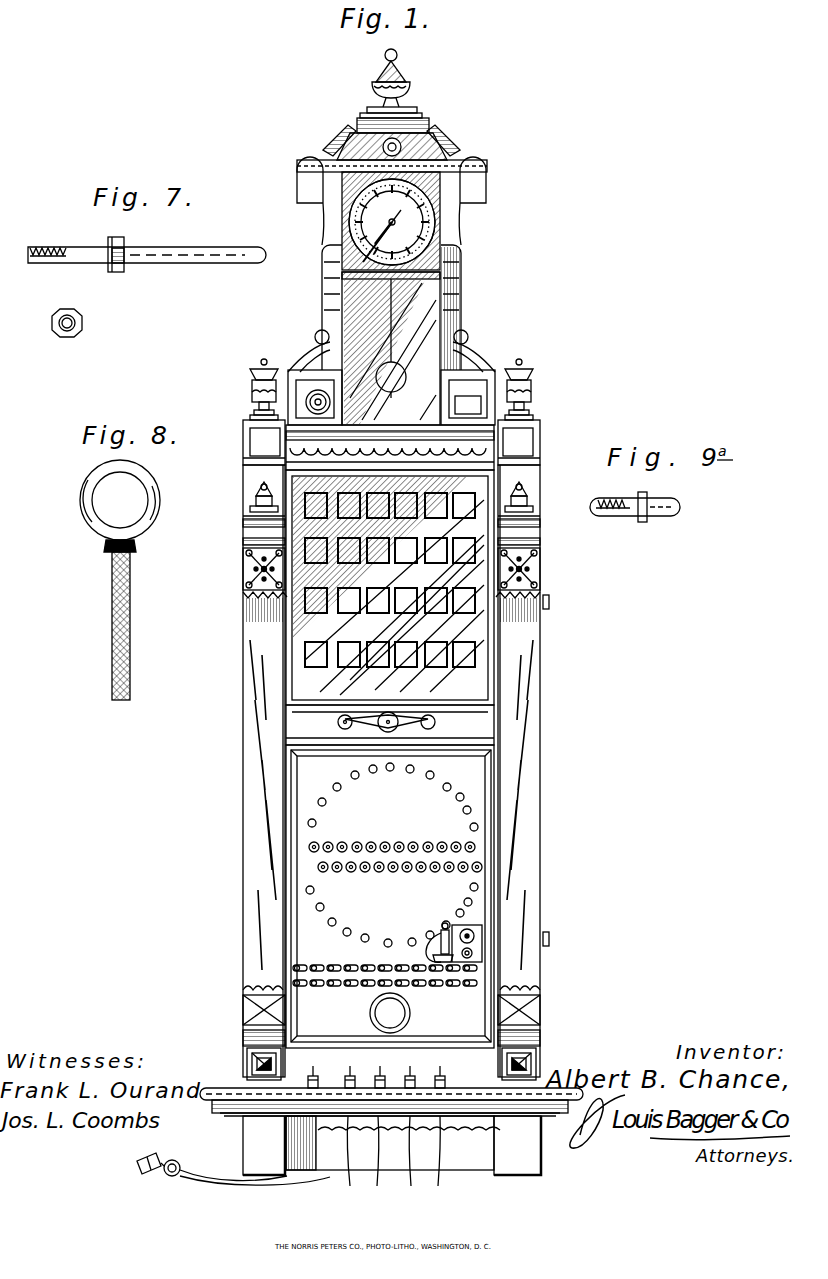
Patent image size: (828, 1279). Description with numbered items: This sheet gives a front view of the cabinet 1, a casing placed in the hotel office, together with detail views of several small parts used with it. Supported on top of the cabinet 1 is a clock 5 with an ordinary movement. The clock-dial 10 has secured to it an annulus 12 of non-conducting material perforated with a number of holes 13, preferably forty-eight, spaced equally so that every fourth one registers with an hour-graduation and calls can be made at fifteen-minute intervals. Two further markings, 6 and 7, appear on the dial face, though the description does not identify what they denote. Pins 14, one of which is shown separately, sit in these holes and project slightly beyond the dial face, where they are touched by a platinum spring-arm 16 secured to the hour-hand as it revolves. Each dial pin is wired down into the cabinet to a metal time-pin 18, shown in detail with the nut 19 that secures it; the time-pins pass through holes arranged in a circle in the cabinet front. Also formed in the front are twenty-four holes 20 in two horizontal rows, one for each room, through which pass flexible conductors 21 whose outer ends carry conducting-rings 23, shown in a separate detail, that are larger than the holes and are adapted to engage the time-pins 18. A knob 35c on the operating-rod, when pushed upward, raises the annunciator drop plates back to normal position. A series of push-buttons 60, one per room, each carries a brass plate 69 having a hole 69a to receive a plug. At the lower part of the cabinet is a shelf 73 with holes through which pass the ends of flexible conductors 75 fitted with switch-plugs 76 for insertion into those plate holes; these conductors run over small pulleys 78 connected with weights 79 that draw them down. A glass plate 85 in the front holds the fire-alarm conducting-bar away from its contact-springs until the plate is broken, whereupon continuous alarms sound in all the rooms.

In FIG. 1, the cabinet 1 is at (424, 759).
In FIG. 1, the platinum spring-arm 16 is at (438, 168).
In FIG. 1, the clock-dial 10 is at (423, 212).
In FIG. 1, the annulus 12 is at (412, 226).
In FIG. 1, the holes 13 is at (437, 240).
In FIG. 1, the hour hand 6 is at (385, 221).
In FIG. 1, the minute hand 7 is at (382, 236).
In FIG. 1, the clock 5 is at (430, 293).
In FIG. 1, the knob 35c is at (386, 717).
In FIG. 1, the time-pin 18 is at (340, 789).
In FIG. 7, the time-pin 18 is at (147, 245).
In FIG. 1, the holes 20 is at (395, 859).
In FIG. 1, the push-buttons 60 is at (328, 960).
In FIG. 1, the hole 69a is at (297, 969).
In FIG. 1, the brass plate 69 is at (330, 985).
In FIG. 1, the glass plate 85 is at (403, 1013).
In FIG. 1, the switch-plugs 76 is at (313, 1082).
In FIG. 1, the shelf 73 is at (445, 1083).
In FIG. 1, the flexible conductors 75 is at (378, 1154).
In FIG. 1, the pulleys 78 is at (247, 1163).
In FIG. 1, the weights 79 is at (151, 1154).
In FIG. 7, the nuts 19 is at (83, 323).
In FIG. 8, the conducting-rings 23 is at (150, 522).
In FIG. 8, the flexible conductors 21 is at (132, 644).
In FIG. 9A, the pins 14 is at (660, 512).